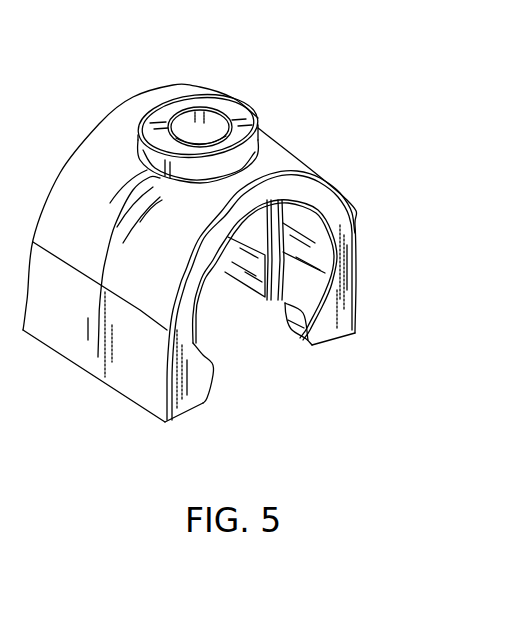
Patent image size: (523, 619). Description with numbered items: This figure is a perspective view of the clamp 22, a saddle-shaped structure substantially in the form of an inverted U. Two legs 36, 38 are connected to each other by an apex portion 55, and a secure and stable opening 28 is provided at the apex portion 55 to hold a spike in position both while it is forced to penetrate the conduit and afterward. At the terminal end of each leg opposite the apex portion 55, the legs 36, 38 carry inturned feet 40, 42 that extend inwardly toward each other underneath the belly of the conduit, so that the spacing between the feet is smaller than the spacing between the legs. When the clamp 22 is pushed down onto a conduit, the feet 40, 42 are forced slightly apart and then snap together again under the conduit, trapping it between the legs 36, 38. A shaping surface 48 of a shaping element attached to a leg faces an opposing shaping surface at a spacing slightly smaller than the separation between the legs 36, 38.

The clamp 22 is at (310, 161).
The opening 28 is at (210, 123).
The leg 36 is at (357, 260).
The leg 38 is at (127, 383).
The inturned foot 40 is at (335, 322).
The inturned foot 42 is at (193, 392).
The shaping surface 48 is at (248, 272).
The apex portion 55 is at (117, 117).